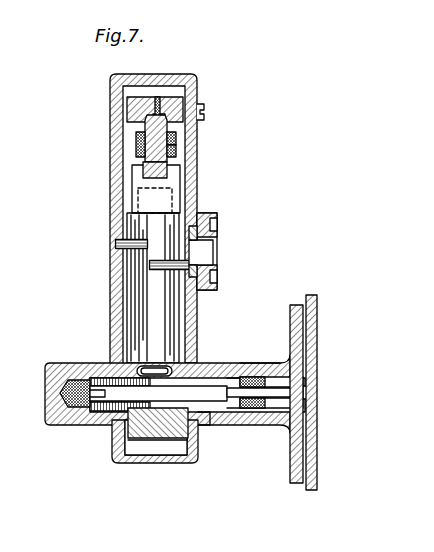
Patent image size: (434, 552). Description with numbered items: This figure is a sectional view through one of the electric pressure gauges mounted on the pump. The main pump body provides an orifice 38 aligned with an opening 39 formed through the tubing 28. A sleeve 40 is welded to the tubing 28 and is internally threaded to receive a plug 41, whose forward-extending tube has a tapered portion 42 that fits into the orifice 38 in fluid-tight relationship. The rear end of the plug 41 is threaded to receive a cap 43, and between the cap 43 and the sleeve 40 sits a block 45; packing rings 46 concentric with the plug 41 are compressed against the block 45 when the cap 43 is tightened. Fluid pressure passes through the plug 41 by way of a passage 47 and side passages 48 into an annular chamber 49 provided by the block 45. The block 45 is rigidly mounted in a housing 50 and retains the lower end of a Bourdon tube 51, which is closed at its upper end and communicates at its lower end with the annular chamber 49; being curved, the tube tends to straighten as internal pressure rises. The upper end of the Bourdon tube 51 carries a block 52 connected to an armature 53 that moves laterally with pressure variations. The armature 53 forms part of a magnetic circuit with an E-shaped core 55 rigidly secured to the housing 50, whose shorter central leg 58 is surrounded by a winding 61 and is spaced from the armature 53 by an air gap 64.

The tubing 28 is at (291, 448).
The orifice 38 is at (316, 391).
The opening 39 is at (313, 400).
The sleeve 40 is at (251, 364).
The plug 41 is at (231, 378).
The tapered portion 42 is at (302, 379).
The cap 43 is at (70, 364).
The block 45 is at (133, 432).
The packing rings 46 is at (176, 410).
The passage 47 is at (207, 405).
The side passages 48 is at (150, 392).
The annular chamber 49 is at (152, 367).
The housing 50 is at (117, 287).
The Bourdon tube 51 is at (143, 242).
The block 52 is at (137, 178).
The armature 53 is at (168, 175).
The E-shaped core 55 is at (143, 124).
The central leg 58 is at (174, 139).
The winding 61 is at (176, 152).
The air gap 64 is at (136, 148).